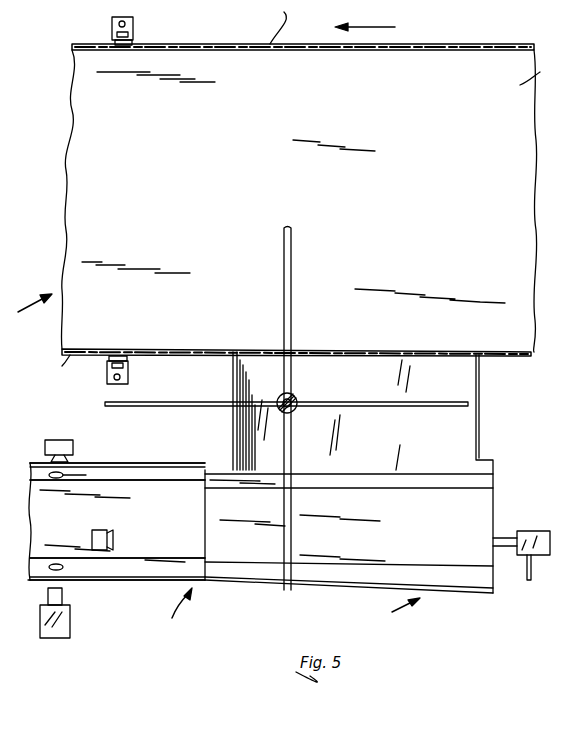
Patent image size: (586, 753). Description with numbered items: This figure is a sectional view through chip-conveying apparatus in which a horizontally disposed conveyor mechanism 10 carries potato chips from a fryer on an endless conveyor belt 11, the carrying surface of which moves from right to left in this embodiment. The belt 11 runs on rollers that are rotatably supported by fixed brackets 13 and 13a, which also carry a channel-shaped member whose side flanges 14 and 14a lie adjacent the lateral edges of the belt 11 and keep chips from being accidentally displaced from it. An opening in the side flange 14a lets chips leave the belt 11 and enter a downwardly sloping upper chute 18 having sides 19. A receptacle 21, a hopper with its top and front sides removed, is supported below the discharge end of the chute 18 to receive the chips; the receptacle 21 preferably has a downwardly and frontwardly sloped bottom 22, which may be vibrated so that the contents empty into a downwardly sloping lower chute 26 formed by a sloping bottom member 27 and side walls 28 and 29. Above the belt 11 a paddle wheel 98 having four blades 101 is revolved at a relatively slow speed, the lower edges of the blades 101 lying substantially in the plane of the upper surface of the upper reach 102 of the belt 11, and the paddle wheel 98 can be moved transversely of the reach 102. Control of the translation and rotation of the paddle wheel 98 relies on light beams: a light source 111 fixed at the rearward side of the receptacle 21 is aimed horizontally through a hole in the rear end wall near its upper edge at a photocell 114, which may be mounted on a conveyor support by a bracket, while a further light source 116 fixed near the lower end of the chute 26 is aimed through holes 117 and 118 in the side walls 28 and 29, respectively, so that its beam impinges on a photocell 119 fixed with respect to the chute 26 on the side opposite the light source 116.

The conveyor mechanism 10 is at (30, 301).
The endless conveyor belt 11 is at (542, 72).
The fixed bracket 13 is at (133, 26).
The fixed bracket 13a is at (128, 366).
The side flange 14 is at (271, 28).
The side flange 14a is at (48, 372).
The upper chute 18 is at (482, 445).
The sides 19 is at (480, 428).
The receptacle 21 is at (392, 610).
The sloped bottom 22 is at (349, 531).
The lower chute 26 is at (168, 606).
The sloping bottom member 27 is at (116, 521).
The side wall 28 is at (107, 479).
The side wall 29 is at (122, 581).
The paddle wheel 98 is at (298, 397).
The blades 101 is at (293, 286).
The upper reach 102 is at (298, 200).
The light source 111 is at (534, 530).
The photocell 114 is at (93, 530).
The light source 116 is at (70, 632).
The hole 117 is at (82, 481).
The hole 118 is at (63, 567).
The photocell 119 is at (73, 444).